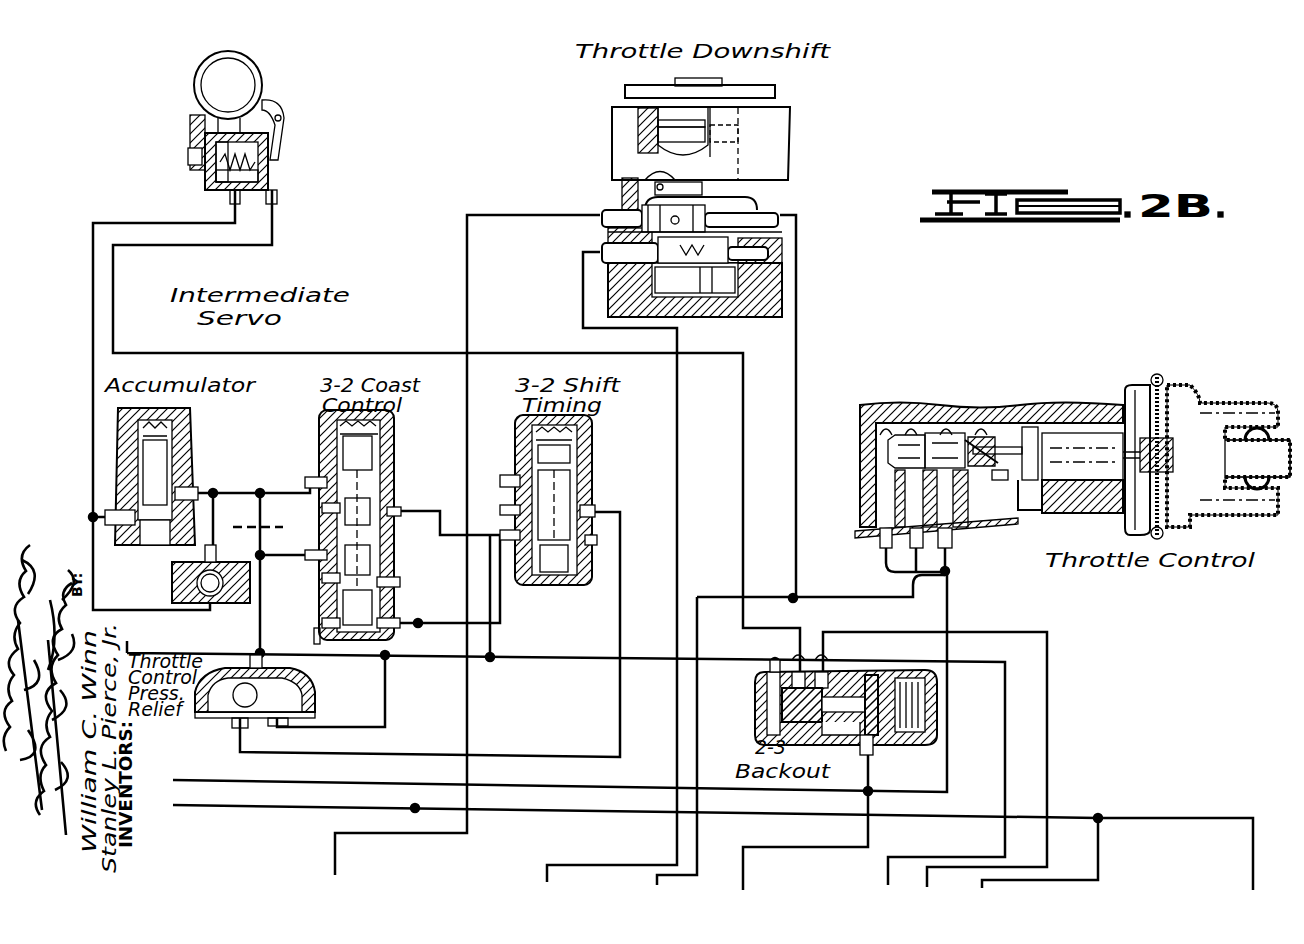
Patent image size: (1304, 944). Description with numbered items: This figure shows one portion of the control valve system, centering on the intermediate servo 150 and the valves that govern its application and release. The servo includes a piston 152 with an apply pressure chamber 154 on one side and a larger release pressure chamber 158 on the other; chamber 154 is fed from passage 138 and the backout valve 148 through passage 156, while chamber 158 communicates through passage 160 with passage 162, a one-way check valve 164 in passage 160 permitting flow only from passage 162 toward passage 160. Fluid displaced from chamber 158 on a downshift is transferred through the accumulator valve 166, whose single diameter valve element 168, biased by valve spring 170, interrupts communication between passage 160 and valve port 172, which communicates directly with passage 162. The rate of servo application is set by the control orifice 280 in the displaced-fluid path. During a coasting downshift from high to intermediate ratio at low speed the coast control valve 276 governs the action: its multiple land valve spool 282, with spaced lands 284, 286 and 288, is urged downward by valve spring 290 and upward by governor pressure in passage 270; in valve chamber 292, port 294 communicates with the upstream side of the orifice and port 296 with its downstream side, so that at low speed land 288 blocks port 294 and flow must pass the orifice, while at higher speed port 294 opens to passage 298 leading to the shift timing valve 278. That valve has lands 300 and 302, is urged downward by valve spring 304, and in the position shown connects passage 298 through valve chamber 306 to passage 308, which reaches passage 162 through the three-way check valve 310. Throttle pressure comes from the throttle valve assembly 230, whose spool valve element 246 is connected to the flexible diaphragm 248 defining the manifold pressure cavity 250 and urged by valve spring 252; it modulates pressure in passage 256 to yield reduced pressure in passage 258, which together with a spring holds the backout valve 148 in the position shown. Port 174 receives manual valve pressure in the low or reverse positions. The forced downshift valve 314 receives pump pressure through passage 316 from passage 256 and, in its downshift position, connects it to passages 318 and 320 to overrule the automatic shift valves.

The intermediate servo 150 is at (280, 70).
The piston 152 is at (212, 152).
The apply pressure chamber 154 is at (218, 183).
The release pressure chamber 158 is at (275, 172).
The passage 160 is at (93, 345).
The passage 156 is at (375, 343).
The accumulator valve 166 is at (132, 472).
The valve spring 170 is at (196, 432).
The valve element 168 is at (172, 462).
The valve port 172 is at (180, 482).
The one-way check valve 164 is at (200, 586).
The control orifice 280 is at (258, 530).
The passage 162 is at (160, 645).
The 3-2 coast control valve 276 is at (358, 522).
The valve spring 290 is at (386, 440).
The valve land 288 is at (386, 462).
The port 294 is at (317, 480).
The valve chamber 292 is at (324, 514).
The valve land 286 is at (320, 556).
The port 296 is at (323, 580).
The valve land 284 is at (340, 620).
The multiple land valve spool 282 is at (380, 582).
The passage 298 is at (452, 518).
The valve land 300 is at (579, 525).
The valve spring 304 is at (586, 460).
The 3-2 shift timing valve 278 is at (583, 478).
The valve land 302 is at (580, 490).
The valve chamber 306 is at (530, 604).
The passage 308 is at (620, 552).
The three-way check valve 310 is at (233, 730).
The forced downshift valve 314 is at (722, 160).
The passage 316 is at (798, 232).
The passage 318 is at (556, 204).
The passage 320 is at (583, 295).
The throttle valve assembly 230 is at (989, 453).
The spool valve element 246 is at (923, 418).
The flexible diaphragm 248 is at (1206, 436).
The pressure cavity 250 is at (1197, 432).
The valve spring 252 is at (1242, 440).
The passage 258 is at (950, 592).
The passage 256 is at (795, 600).
The 2-3 backout valve 148 is at (823, 655).
The port 174 is at (870, 680).
The passage 138 is at (990, 632).
The passage 270 is at (230, 810).